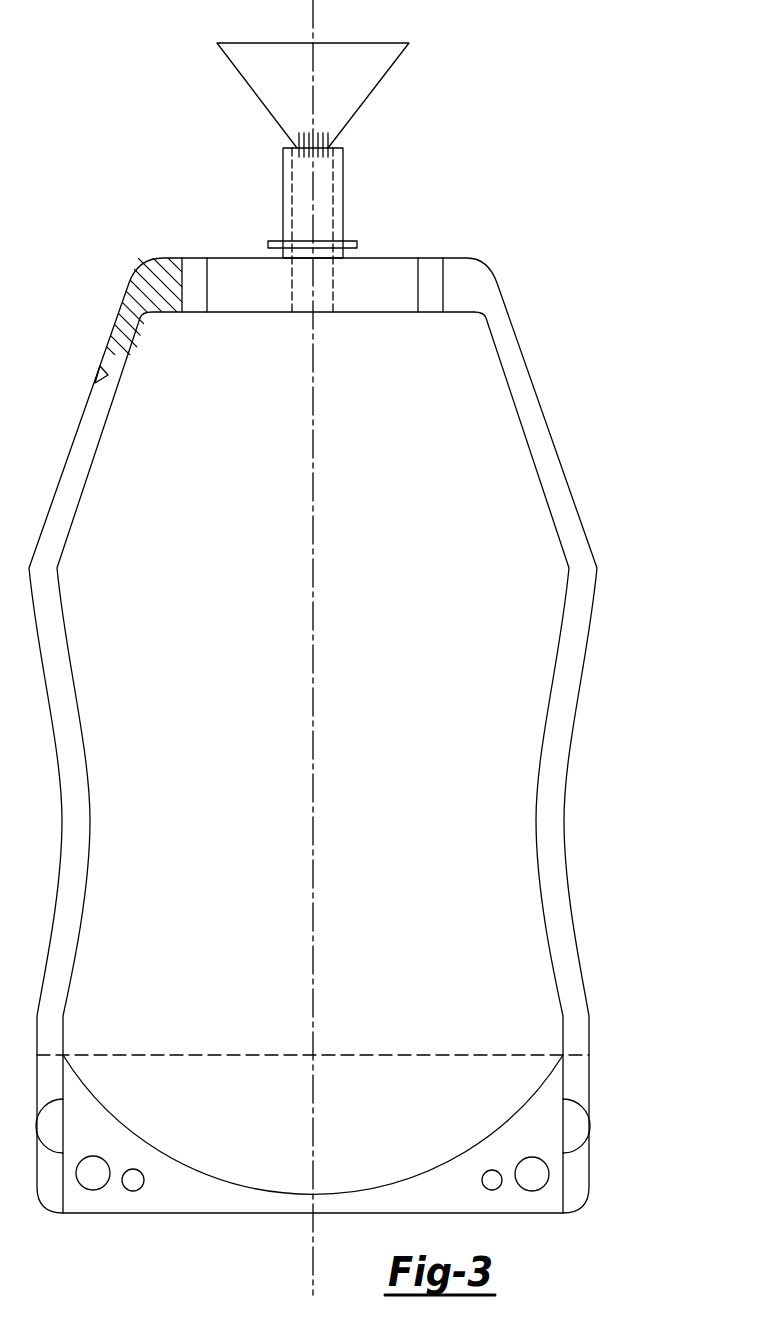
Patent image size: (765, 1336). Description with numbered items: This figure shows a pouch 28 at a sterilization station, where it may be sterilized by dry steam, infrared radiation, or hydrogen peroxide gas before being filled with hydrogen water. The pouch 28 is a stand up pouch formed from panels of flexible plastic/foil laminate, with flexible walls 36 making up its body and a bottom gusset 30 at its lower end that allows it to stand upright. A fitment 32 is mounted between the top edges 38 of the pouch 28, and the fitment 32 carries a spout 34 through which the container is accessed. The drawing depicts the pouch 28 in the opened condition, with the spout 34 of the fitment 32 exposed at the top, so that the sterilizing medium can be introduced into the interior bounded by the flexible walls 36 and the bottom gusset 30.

The pouch 28 is at (583, 763).
The bottom gusset 30 is at (589, 1126).
The fitment 32 is at (348, 191).
The spout 34 is at (300, 172).
The flexible walls 36 is at (492, 688).
The top edges 38 is at (378, 292).